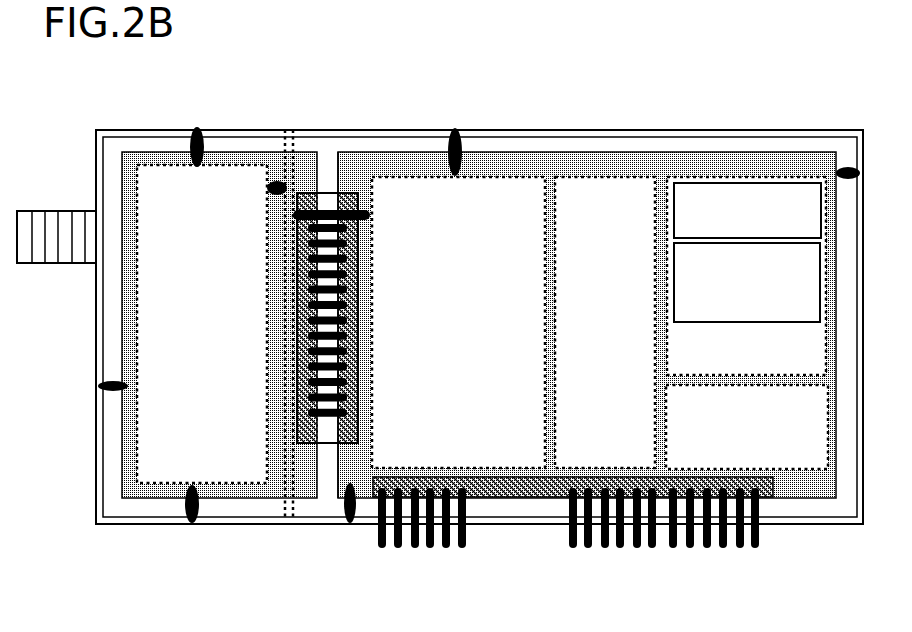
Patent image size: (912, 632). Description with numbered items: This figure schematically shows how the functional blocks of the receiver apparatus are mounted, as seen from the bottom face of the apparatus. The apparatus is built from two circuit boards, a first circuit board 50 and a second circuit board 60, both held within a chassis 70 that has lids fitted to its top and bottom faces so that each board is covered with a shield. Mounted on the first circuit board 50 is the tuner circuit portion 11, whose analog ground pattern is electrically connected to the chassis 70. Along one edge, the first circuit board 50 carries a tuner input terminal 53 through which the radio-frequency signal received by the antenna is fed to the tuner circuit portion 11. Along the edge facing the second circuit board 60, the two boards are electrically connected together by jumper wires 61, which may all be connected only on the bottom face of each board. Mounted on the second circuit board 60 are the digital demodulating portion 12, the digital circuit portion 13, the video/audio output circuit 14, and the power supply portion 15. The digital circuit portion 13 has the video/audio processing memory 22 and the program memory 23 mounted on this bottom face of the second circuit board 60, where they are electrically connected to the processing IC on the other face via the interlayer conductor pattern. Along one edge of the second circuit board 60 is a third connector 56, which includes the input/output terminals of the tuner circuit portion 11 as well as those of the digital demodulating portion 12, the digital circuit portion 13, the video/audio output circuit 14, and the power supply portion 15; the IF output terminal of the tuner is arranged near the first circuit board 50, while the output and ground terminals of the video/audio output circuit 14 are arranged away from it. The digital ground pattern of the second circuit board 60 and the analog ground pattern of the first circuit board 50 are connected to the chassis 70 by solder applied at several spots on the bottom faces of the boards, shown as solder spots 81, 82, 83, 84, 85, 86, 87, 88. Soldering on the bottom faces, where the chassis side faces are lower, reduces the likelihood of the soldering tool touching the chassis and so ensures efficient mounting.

The tuner circuit portion 11 is at (202, 324).
The digital demodulating portion 12 is at (458, 322).
The digital circuit portion 13 is at (748, 220).
The video/audio output circuit 14 is at (805, 468).
The power supply portion 15 is at (605, 322).
The video/audio processing memory 22 is at (816, 242).
The program memory 23 is at (755, 183).
The first circuit board 50 is at (153, 498).
The tuner input terminal 53 is at (70, 210).
The third connector 56 is at (462, 548).
The second circuit board 60 is at (423, 152).
The jumper wires 61 is at (328, 445).
The chassis 70 is at (97, 497).
The solder spot 81 is at (197, 128).
The solder spot 82 is at (277, 182).
The solder spot 83 is at (323, 200).
The solder spot 84 is at (455, 128).
The solder spot 85 is at (848, 167).
The solder spot 86 is at (350, 523).
The solder spot 87 is at (198, 521).
The solder spot 88 is at (98, 386).